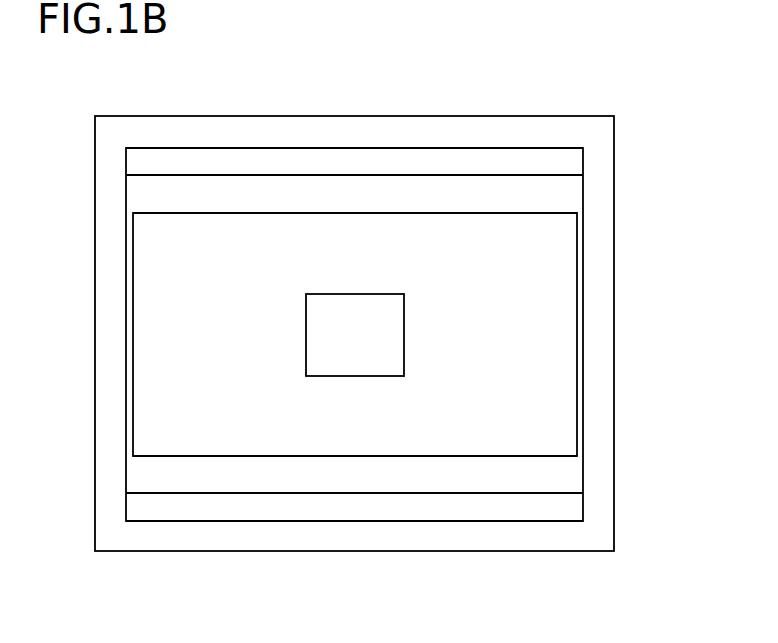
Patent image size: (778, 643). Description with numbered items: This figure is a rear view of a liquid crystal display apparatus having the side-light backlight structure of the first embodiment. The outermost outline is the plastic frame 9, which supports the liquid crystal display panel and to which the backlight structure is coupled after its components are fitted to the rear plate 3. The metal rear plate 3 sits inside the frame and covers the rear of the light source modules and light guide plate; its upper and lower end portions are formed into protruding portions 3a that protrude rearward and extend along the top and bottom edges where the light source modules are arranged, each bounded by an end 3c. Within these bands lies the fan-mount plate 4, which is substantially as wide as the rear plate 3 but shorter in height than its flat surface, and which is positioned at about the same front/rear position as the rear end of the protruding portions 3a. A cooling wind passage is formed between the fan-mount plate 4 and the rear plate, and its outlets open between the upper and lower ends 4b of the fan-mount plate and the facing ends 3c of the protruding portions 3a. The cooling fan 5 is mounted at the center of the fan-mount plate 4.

The plastic frame 9 is at (355, 135).
The rear plate 3 is at (440, 147).
The protruding portions 3a is at (511, 165).
The ends of the protruding portions 3c is at (532, 175).
The fan-mount plate 4 is at (550, 339).
The upper and lower ends of the fan-mount plate 4b is at (532, 213).
The cooling fan 5 is at (354, 358).